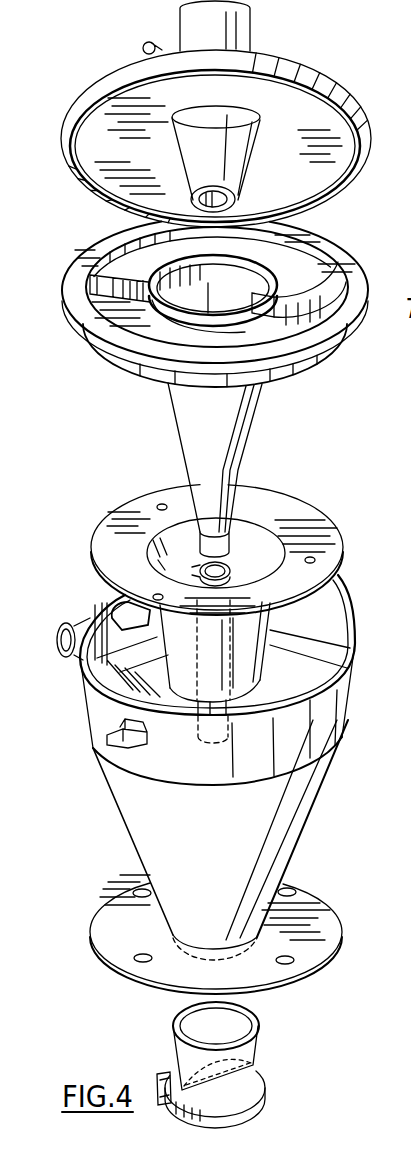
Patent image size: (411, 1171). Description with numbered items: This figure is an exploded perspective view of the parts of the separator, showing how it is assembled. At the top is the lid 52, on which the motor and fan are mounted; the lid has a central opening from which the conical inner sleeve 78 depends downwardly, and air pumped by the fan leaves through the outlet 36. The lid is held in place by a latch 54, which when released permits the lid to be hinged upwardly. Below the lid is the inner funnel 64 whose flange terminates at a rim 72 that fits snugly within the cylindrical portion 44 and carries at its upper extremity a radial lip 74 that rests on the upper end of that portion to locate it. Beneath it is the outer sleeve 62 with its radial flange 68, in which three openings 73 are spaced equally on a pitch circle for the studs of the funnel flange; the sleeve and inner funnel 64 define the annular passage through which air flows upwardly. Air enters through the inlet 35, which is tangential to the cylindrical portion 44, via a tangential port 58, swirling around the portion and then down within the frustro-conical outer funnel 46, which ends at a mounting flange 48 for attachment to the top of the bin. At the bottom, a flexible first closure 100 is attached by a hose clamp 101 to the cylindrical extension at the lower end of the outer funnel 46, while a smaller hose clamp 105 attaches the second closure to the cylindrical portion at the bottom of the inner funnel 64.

The inlet 35 is at (60, 653).
The outlet 36 is at (148, 48).
The cylindrical portion 44 is at (333, 697).
The outer funnel 46 is at (280, 843).
The mounting flange 48 is at (323, 915).
The lid 52 is at (355, 92).
The latch 54 is at (147, 742).
The tangential port 58 is at (107, 593).
The outer sleeve 62 is at (348, 612).
The inner funnel 64 is at (253, 424).
The radial flange 68 is at (322, 523).
The rim 72 is at (330, 347).
The openings 73 is at (363, 556).
The radial lip 74 is at (357, 272).
The conical inner sleeve 78 is at (243, 155).
The first closure 100 is at (258, 1035).
The hose clamp 101 is at (262, 1095).
The smaller hose clamp 105 is at (232, 563).